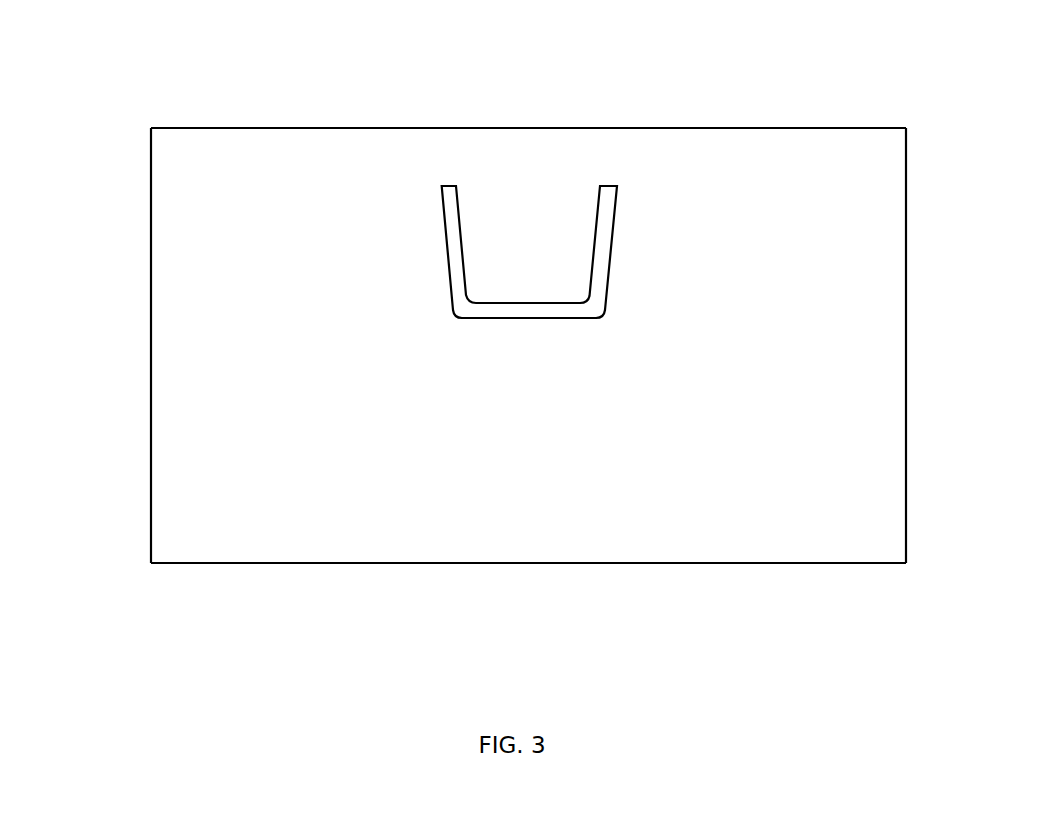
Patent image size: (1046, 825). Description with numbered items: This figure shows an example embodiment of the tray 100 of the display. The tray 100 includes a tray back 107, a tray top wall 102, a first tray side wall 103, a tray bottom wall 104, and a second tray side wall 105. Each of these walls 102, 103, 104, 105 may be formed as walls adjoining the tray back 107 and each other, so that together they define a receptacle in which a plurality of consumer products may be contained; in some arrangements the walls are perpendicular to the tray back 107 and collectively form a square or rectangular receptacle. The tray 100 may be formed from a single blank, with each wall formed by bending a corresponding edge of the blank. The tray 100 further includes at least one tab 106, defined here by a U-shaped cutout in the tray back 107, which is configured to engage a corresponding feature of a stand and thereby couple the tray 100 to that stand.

The tray 100 is at (85, 97).
The tray top wall 102 is at (238, 127).
The first tray side wall 103 is at (906, 477).
The tray bottom wall 104 is at (817, 565).
The second tray side wall 105 is at (151, 228).
The tab 106 is at (513, 285).
The tray back 107 is at (513, 435).